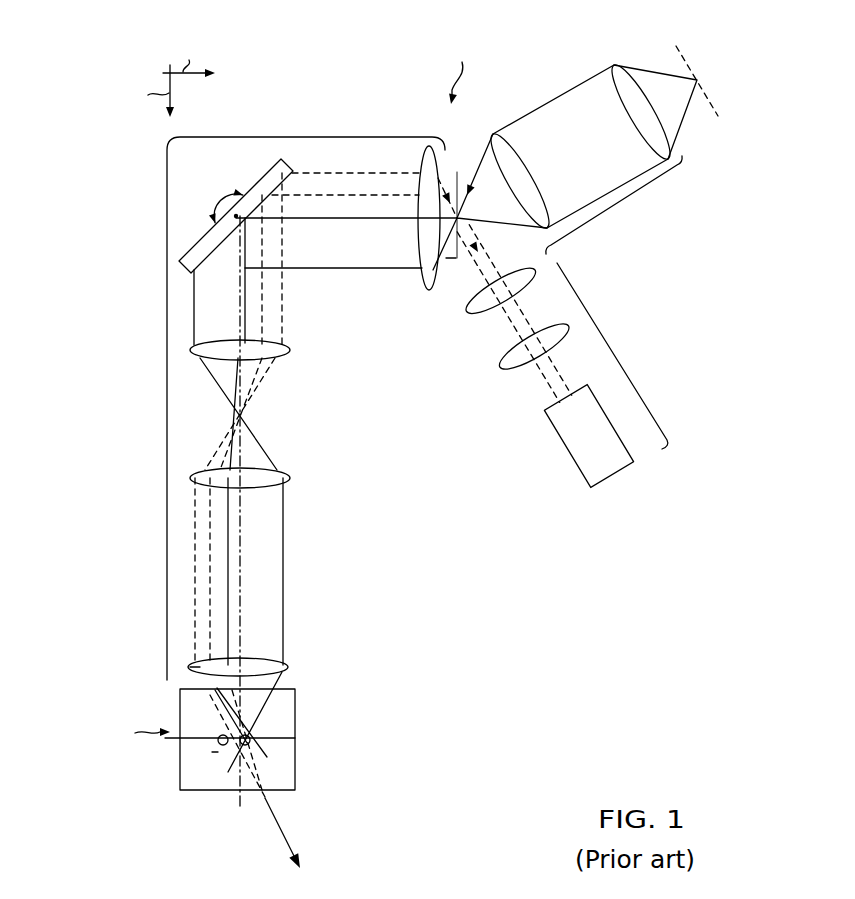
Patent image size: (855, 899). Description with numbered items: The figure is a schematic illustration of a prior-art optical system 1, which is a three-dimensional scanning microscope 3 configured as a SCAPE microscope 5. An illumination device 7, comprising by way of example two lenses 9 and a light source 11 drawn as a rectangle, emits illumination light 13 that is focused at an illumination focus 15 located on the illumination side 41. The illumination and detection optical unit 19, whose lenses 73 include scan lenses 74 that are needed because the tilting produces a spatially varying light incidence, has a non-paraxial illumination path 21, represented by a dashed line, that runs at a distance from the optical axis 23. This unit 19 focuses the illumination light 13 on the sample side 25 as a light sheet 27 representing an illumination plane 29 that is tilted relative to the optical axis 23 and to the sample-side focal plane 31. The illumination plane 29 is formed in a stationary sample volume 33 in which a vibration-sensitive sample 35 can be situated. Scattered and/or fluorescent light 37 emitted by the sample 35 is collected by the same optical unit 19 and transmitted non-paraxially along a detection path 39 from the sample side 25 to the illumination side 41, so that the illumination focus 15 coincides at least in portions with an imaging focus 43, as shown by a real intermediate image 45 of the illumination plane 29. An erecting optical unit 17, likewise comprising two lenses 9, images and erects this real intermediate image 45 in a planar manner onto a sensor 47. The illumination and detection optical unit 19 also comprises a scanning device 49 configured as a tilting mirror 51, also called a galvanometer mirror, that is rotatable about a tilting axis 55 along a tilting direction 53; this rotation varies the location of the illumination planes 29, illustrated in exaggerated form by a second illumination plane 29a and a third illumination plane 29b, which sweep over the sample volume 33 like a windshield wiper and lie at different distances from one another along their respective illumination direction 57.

The optical system 1 is at (413, 434).
The 3D scanning microscope 3 is at (413, 434).
The SCAPE microscope 5 is at (362, 52).
The illumination device 7 is at (612, 348).
The lenses 9 is at (497, 136).
The light source 11 is at (610, 462).
The illumination light 13 is at (195, 637).
The illumination focus 15 is at (459, 205).
The erecting optical unit 17 is at (614, 205).
The illumination and detection optical unit 19 is at (167, 203).
The non-paraxial illumination path 21 is at (327, 172).
The optical axis 23 is at (240, 523).
The sample side 25 is at (137, 734).
The light sheet 27 is at (268, 778).
The illumination plane 29 is at (296, 735).
The second illumination plane 29a is at (229, 748).
The third illumination plane 29b is at (251, 746).
The sample-side focal plane 31 is at (283, 736).
The sample volume 33 is at (297, 703).
The sample 35 is at (218, 750).
The scattered and/or fluorescent light 37 is at (286, 674).
The detection path 39 is at (283, 632).
The illumination side 41 is at (464, 70).
The imaging focus 43 is at (438, 286).
The real intermediate image 45 is at (438, 286).
The sensor 47 is at (712, 116).
The scanning device 49 is at (188, 216).
The tilting mirror 51 is at (197, 247).
The tilting direction 53 is at (227, 193).
The tilting axis 55 is at (236, 220).
The illumination direction 57 is at (280, 815).
The lens 73 is at (256, 517).
The scan lenses 74 is at (290, 349).